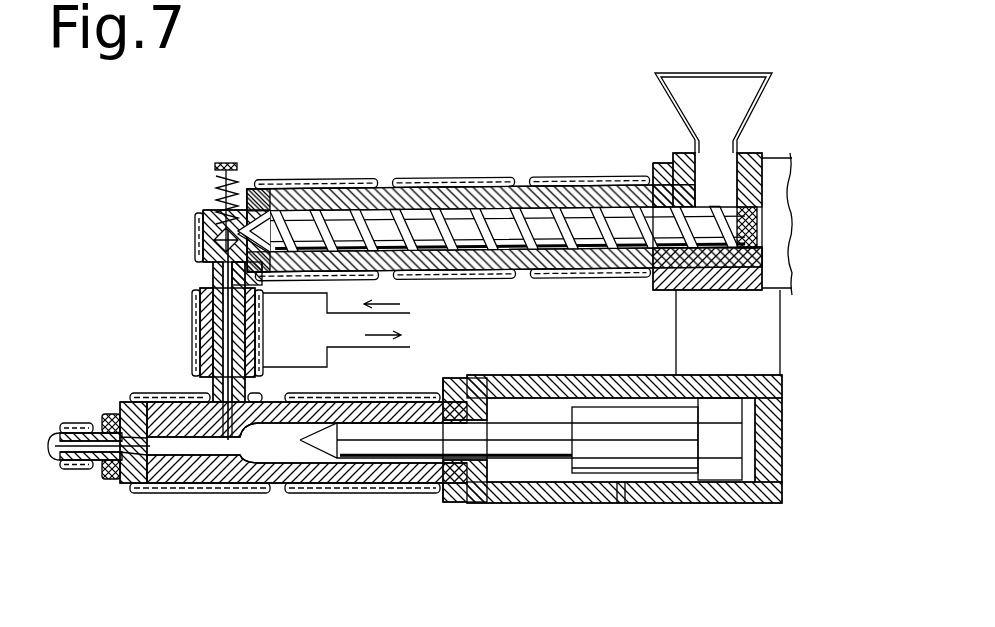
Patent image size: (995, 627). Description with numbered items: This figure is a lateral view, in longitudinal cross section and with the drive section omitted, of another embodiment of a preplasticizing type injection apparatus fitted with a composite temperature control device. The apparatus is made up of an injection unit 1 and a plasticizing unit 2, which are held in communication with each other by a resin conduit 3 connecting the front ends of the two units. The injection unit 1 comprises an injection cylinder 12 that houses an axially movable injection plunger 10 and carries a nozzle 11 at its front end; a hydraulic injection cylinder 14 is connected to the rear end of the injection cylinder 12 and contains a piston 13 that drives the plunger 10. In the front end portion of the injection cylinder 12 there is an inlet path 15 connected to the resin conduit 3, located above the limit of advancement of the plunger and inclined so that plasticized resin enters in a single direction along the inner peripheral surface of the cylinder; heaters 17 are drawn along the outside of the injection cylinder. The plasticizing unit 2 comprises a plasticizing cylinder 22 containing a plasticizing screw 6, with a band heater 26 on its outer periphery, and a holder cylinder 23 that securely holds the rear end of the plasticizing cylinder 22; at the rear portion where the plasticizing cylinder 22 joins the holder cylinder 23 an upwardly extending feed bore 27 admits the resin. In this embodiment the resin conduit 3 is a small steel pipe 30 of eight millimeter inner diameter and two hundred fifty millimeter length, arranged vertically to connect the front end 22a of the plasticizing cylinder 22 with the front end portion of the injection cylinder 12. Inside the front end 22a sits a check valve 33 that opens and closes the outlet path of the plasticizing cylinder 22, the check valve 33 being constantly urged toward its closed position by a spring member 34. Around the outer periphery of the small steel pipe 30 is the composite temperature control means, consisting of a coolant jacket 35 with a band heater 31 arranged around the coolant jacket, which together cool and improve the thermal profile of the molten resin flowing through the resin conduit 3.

The injection unit 1 is at (307, 497).
The plasticizing unit 2 is at (498, 185).
The resin conduit 3 is at (226, 316).
The screw 6 is at (552, 226).
The injection plunger 10 is at (510, 445).
The nozzle 11 is at (57, 464).
The injection cylinder 12 is at (204, 478).
The piston 13 is at (630, 415).
The hydraulic injection cylinder 14 is at (645, 495).
The inlet path 15 is at (248, 466).
The heater 17 is at (367, 495).
The plasticizing cylinder 22 is at (440, 186).
The front end of the plasticizing cylinder 22a is at (212, 215).
The holder cylinder 23 is at (776, 247).
The band heater 26 is at (355, 178).
The feed bore 27 is at (720, 167).
The small steel pipe 30 is at (212, 277).
The band heater 31 is at (197, 316).
The check valve 33 is at (205, 238).
The spring member 34 is at (233, 185).
The coolant jacket 35 is at (196, 340).